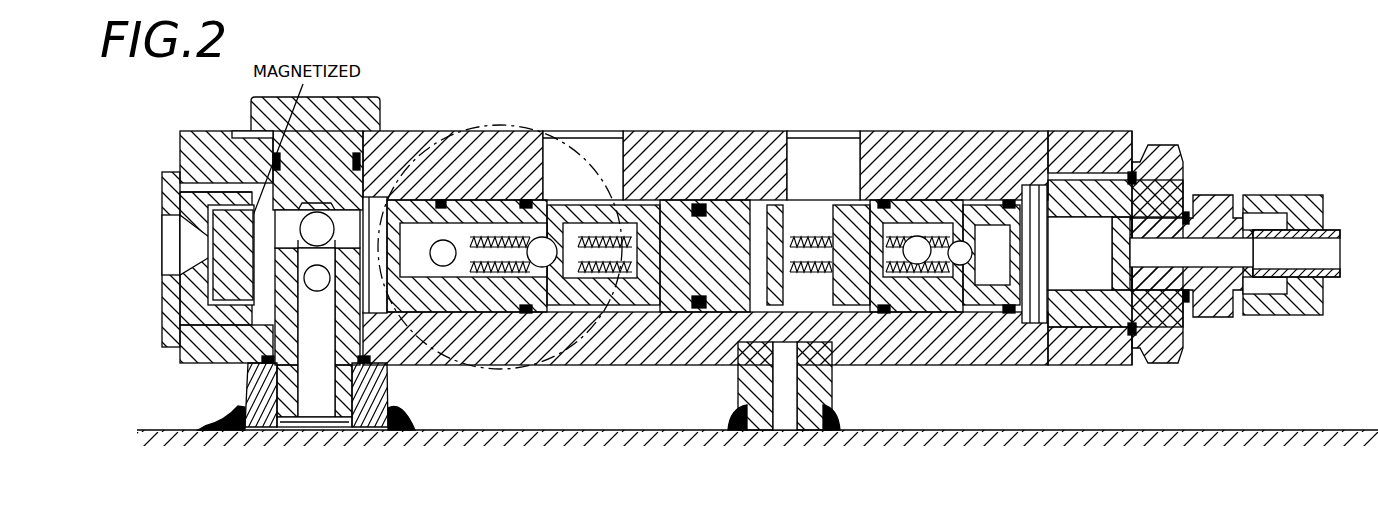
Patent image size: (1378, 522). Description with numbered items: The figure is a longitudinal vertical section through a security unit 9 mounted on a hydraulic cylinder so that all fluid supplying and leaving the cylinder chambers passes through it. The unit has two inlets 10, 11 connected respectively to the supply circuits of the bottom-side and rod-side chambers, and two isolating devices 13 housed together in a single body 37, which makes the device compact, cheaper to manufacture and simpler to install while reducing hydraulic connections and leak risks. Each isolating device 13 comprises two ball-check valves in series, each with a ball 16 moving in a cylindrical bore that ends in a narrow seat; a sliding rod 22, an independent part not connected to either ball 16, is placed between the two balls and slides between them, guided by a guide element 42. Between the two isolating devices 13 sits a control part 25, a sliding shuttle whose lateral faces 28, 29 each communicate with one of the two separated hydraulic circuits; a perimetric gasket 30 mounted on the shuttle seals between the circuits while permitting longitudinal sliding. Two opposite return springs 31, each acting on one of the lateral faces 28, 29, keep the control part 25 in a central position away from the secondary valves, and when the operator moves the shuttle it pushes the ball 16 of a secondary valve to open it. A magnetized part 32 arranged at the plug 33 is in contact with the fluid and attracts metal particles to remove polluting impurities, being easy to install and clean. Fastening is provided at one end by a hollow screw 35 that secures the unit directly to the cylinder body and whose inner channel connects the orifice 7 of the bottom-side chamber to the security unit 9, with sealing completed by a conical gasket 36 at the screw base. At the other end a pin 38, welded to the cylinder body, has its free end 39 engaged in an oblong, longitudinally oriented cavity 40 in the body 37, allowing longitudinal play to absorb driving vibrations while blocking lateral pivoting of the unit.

The orifice 7 is at (316, 428).
The security unit 9 is at (1088, 121).
The inlet 10 is at (583, 148).
The inlet 11 is at (832, 148).
The isolating device 13 is at (500, 306).
The ball 16 is at (440, 200).
The sliding rod 22 is at (468, 238).
The control part 25 is at (691, 280).
The lateral face 28 is at (640, 240).
The lateral face 29 is at (738, 240).
The perimetric gasket 30 is at (699, 205).
The return spring 31 is at (785, 205).
The magnetized part 32 is at (178, 167).
The plug 33 is at (185, 306).
The hollow screw 35 is at (248, 398).
The conical gasket 36 is at (395, 400).
The body 37 is at (1042, 138).
The pin 38 is at (815, 388).
The free end 39 is at (760, 350).
The cavity 40 is at (797, 419).
The guide element 42 is at (470, 318).